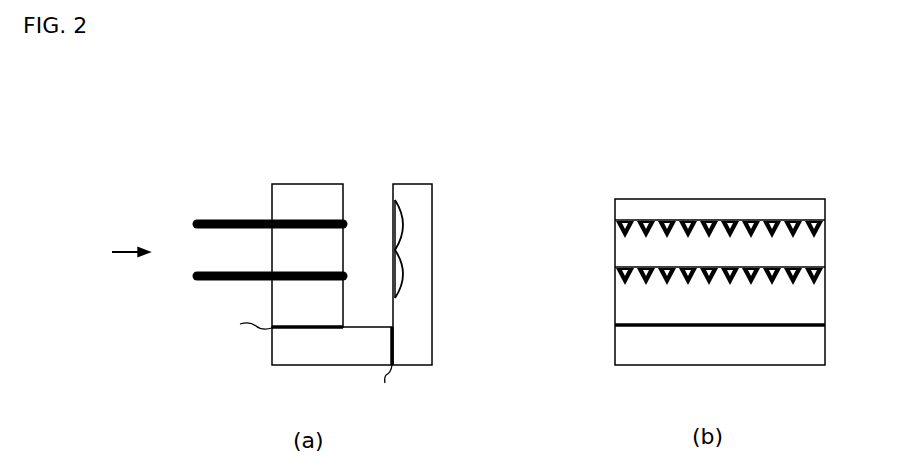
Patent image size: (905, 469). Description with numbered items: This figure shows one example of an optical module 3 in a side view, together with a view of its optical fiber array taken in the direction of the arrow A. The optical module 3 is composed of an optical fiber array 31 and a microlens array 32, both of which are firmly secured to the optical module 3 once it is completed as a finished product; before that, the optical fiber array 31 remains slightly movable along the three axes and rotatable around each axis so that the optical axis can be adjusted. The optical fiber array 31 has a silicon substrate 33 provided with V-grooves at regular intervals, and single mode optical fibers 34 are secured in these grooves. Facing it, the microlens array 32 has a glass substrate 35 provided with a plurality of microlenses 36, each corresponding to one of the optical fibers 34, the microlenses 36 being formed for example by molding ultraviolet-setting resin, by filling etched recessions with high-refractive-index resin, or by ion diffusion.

The optical module 3 is at (255, 245).
The optical fiber array 31 is at (298, 192).
The microlens array 32 is at (424, 190).
The silicon substrate 33 is at (807, 248).
The single mode optical fibers 34 is at (212, 218).
The glass substrate 35 is at (424, 265).
The microlenses 36 is at (396, 216).